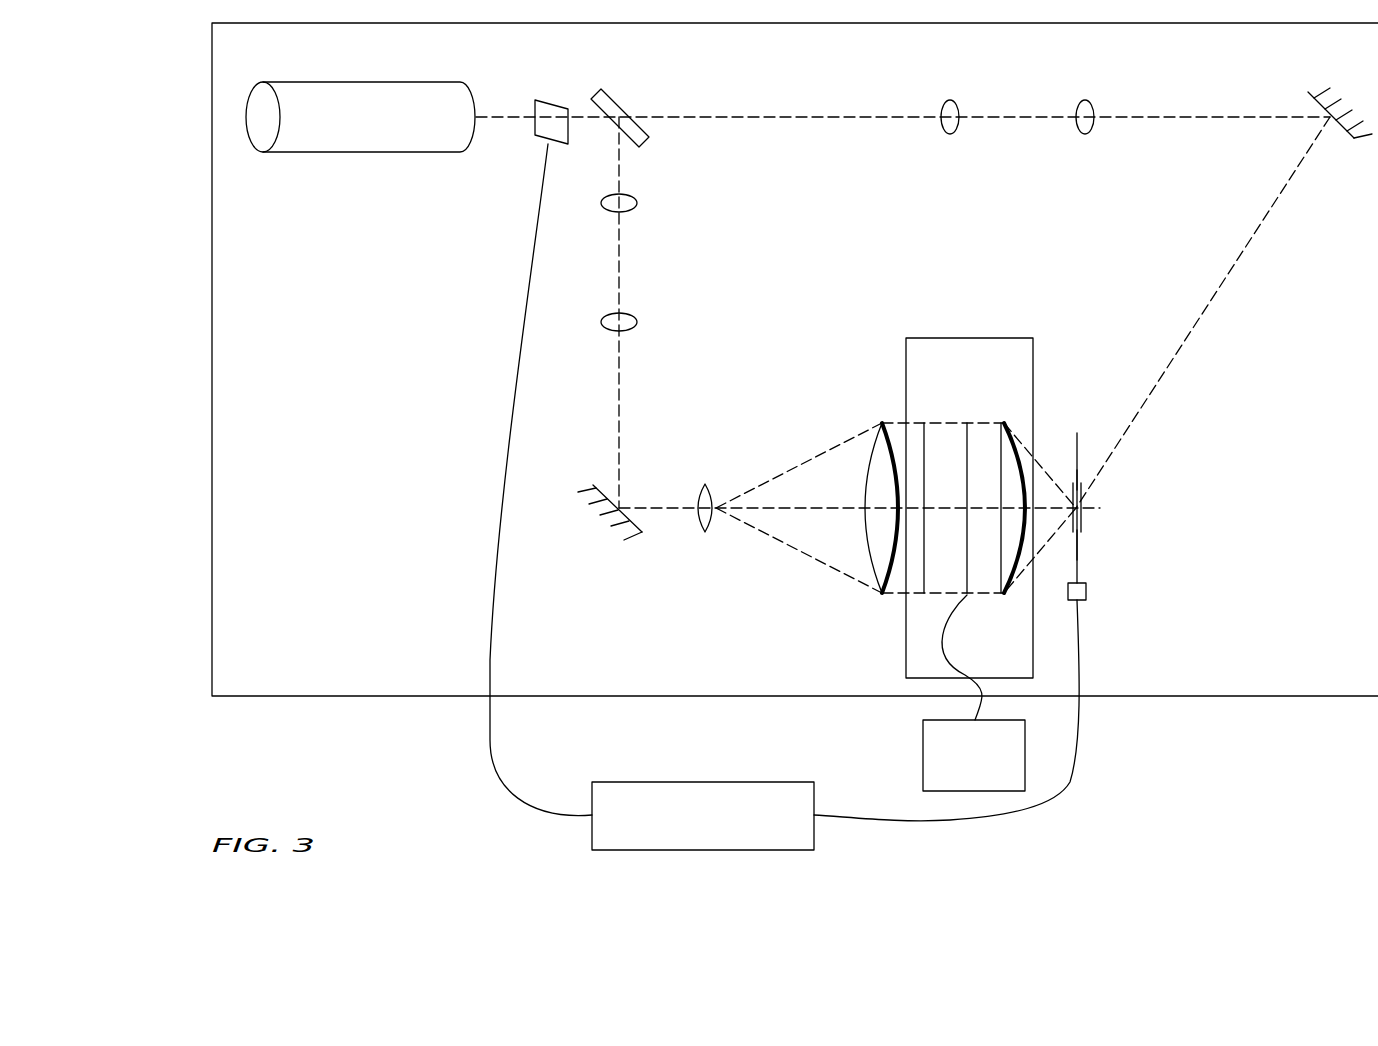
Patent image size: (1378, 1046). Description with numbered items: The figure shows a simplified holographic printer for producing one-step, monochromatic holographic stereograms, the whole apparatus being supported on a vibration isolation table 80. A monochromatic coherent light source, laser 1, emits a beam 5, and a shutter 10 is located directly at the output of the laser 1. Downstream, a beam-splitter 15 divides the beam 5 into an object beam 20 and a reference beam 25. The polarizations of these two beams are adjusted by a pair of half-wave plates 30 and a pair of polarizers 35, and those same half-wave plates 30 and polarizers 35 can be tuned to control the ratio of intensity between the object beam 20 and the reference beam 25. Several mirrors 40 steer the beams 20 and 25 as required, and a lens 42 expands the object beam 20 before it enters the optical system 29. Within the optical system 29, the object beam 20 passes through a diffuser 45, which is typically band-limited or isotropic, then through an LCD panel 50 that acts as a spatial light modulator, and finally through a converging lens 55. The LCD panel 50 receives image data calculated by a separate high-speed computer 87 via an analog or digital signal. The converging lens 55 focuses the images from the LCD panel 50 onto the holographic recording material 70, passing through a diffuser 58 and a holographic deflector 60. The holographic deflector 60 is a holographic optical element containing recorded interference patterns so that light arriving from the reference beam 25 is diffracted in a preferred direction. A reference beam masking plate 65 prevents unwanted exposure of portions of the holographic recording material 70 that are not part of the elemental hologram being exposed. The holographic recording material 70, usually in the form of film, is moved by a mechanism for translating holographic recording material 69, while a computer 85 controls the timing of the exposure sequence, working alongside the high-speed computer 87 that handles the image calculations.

The laser 1 is at (366, 153).
The beam 5 is at (492, 120).
The shutter 10 is at (548, 99).
The beam-splitter 15 is at (624, 103).
The object beam 20 is at (618, 381).
The reference beam 25 is at (1203, 318).
The optical system 29 is at (1000, 337).
The half-wave plates 30 is at (637, 203).
The polarizers 35 is at (637, 322).
The mirrors 40 is at (1308, 91).
The lens 42 is at (705, 534).
The diffuser 45 is at (924, 422).
The LCD panel 50 is at (967, 422).
The converging lens 55 is at (1006, 596).
The diffuser 58 is at (1074, 470).
The holographic deflector 60 is at (1073, 536).
The reference beam masking plate 65 is at (1082, 520).
The mechanism for translating holographic recording material 69 is at (1087, 592).
The holographic recording material 70 is at (1078, 433).
The vibration isolation table 80 is at (441, 722).
The computer 85 is at (784, 497).
The high-speed computer 87 is at (974, 693).